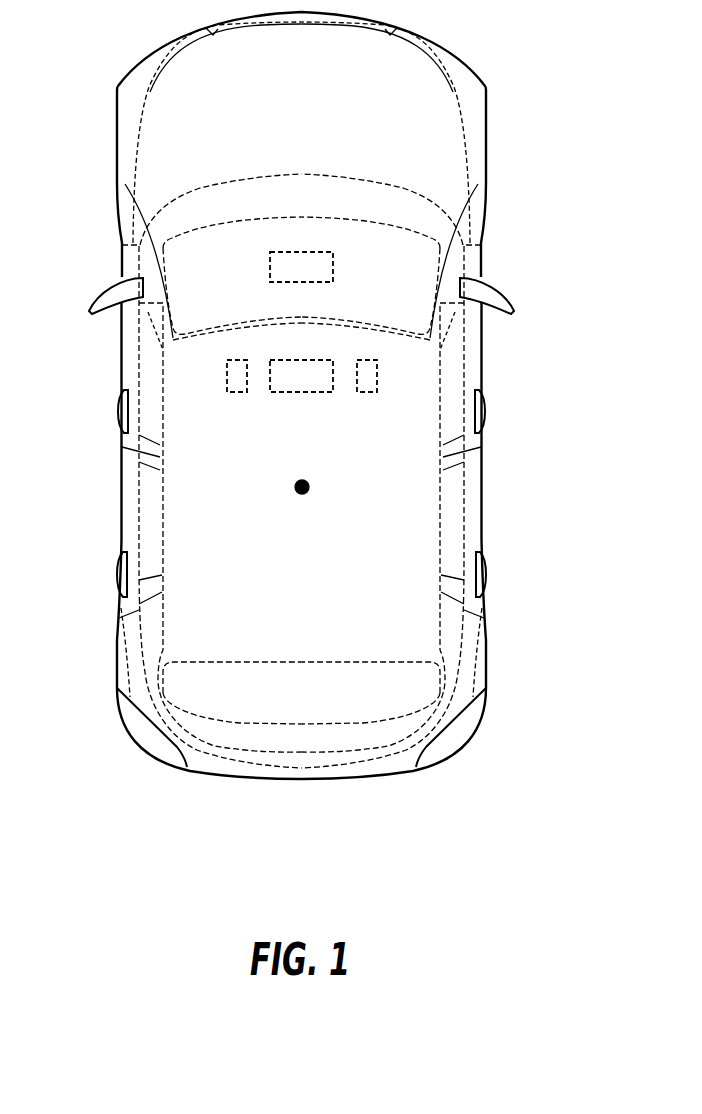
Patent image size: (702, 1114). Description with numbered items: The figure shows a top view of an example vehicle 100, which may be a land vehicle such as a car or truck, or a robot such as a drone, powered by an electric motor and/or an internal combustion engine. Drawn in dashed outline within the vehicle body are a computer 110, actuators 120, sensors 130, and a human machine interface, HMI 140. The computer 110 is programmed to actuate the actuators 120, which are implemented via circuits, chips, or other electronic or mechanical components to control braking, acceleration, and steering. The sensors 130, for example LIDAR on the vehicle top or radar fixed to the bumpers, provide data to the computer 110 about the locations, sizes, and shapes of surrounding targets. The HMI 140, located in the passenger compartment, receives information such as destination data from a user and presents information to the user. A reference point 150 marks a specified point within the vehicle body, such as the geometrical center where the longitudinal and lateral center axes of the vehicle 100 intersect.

The vehicle 100 is at (316, 586).
The computer 110 is at (271, 358).
The actuator 120 is at (227, 380).
The sensor 130 is at (377, 378).
The human machine interface 140 is at (333, 255).
The reference point 150 is at (296, 490).